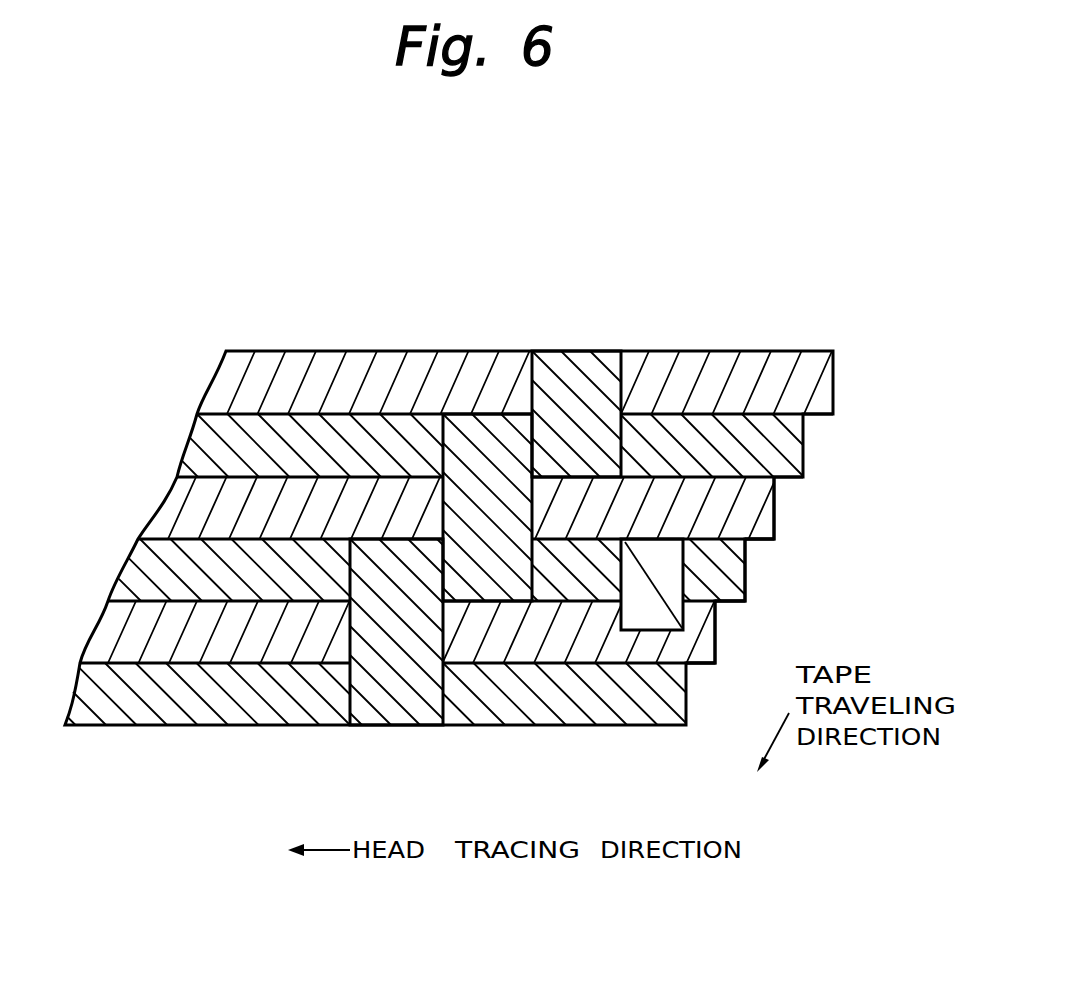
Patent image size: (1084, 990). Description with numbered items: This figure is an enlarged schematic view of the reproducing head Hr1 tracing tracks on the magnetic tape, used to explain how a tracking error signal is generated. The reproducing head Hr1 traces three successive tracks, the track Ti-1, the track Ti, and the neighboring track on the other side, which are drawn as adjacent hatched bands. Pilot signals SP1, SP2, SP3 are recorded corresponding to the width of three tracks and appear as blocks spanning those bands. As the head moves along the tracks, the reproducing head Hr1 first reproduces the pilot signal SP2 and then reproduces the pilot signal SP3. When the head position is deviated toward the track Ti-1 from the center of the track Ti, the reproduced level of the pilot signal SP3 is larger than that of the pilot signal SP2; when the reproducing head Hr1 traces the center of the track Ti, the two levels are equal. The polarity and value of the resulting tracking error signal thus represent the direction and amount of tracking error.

The pilot signal SP1 is at (570, 380).
The pilot signal SP2 is at (481, 430).
The pilot signal SP3 is at (378, 707).
The reproducing head Hr1 is at (642, 615).
The track Ti is at (733, 575).
The track Ti-1 is at (705, 640).